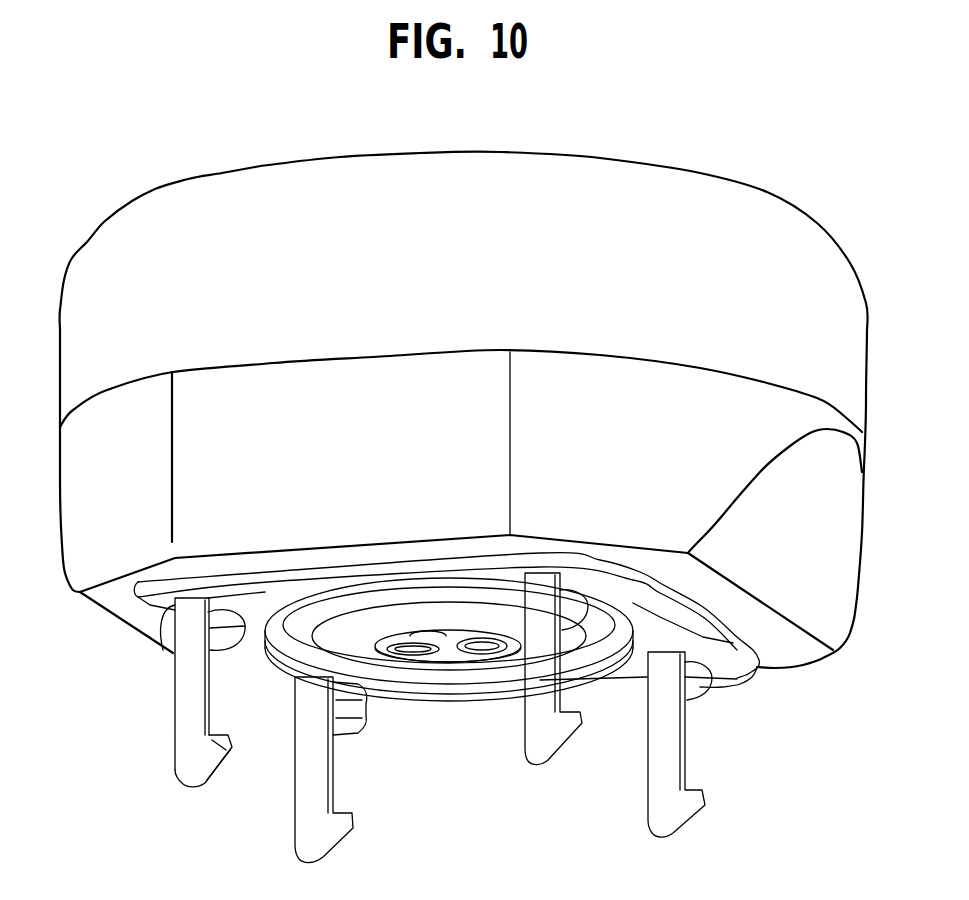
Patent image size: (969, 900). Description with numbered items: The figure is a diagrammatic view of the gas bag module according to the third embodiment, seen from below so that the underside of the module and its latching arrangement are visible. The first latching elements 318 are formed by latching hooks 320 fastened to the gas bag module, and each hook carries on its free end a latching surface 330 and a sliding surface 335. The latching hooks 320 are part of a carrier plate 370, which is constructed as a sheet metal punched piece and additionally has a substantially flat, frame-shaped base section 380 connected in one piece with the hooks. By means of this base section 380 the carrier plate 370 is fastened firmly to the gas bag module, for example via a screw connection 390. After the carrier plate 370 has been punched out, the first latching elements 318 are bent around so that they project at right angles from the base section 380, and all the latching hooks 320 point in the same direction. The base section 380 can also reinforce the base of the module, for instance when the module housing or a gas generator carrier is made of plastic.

The first latching element 318 is at (152, 662).
The latching hook 320 is at (320, 827).
The latching surface 330 is at (222, 735).
The sliding surface 335 is at (219, 770).
The carrier plate 370 is at (748, 683).
The base section 380 is at (707, 633).
The screw connection 390 is at (363, 713).